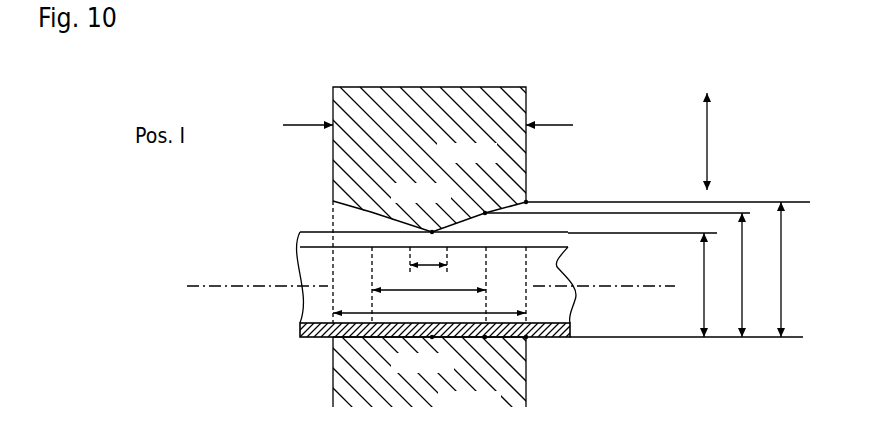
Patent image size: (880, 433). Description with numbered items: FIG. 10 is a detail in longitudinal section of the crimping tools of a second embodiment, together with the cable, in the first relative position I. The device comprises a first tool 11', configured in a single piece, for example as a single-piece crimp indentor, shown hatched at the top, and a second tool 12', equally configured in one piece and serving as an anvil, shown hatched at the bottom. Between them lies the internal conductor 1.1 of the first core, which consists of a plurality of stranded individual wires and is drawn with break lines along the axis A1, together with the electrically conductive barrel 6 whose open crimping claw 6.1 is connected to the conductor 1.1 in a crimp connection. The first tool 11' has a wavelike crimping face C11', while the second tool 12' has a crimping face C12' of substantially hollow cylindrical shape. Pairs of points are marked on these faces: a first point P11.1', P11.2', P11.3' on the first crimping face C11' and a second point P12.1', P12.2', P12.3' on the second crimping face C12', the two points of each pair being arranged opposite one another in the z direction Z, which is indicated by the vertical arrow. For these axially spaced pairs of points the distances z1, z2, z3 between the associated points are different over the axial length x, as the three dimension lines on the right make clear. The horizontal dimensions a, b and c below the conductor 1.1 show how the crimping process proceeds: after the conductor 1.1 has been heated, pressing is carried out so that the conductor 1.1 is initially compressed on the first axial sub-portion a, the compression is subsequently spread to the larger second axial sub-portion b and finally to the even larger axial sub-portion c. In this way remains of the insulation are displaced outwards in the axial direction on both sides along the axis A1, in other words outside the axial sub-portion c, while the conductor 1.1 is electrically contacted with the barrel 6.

The first tool 11' is at (470, 205).
The second tool 12' is at (421, 377).
The crimping face of the first tool C11' is at (383, 213).
The crimping face of the second tool C12' is at (383, 327).
The open crimping claw 6.1 is at (300, 239).
The barrel 6 is at (572, 323).
The internal conductor 1.1 is at (557, 268).
The axis A1 is at (188, 286).
The first point on the first crimping face P11.1' is at (421, 207).
The first point on the first crimping face P11.2' is at (467, 177).
The first point on the first crimping face P11.3' is at (559, 188).
The second point on the second crimping face P12.1' is at (422, 355).
The second point on the second crimping face P12.2' is at (469, 374).
The second point on the second crimping face P12.3' is at (560, 352).
The axial length x is at (428, 113).
The z direction Z is at (715, 141).
The distance between a pair of points z1 is at (713, 285).
The distance between a pair of points z2 is at (752, 275).
The distance between a pair of points z3 is at (791, 269).
The first axial sub-portion a is at (428, 253).
The second axial sub-portion b is at (429, 280).
The axial sub-portion c is at (429, 304).